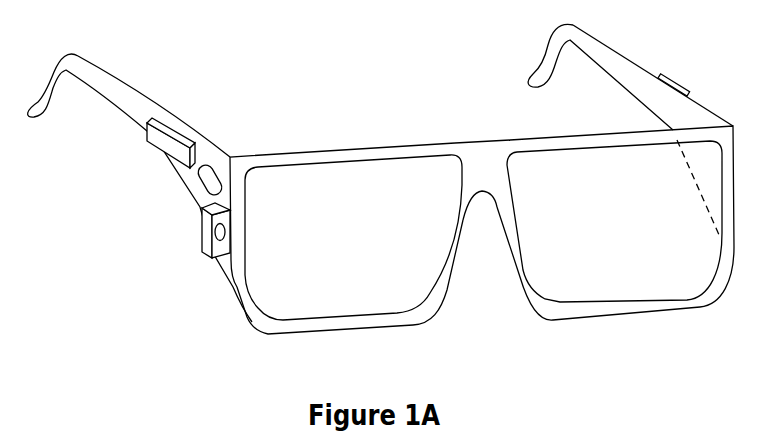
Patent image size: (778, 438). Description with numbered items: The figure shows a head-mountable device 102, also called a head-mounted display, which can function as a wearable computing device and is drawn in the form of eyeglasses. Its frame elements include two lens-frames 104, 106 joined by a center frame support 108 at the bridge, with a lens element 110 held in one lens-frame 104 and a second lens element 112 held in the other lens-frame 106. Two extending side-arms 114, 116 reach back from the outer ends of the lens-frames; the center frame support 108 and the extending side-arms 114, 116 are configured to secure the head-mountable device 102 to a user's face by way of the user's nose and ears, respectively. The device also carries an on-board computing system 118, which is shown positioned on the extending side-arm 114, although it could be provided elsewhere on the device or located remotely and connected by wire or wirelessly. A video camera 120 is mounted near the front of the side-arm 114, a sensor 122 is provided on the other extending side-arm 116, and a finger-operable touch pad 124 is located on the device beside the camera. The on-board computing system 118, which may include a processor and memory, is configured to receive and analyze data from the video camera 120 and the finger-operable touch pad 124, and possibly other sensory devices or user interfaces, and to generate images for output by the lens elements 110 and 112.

The head-mountable device 102 is at (331, 56).
The lens-frame 104 is at (323, 155).
The lens-frame 106 is at (557, 138).
The center frame support 108 is at (482, 162).
The lens element 110 is at (297, 298).
The lens element 112 is at (630, 283).
The extending side-arm 114 is at (173, 114).
The extending side-arm 116 is at (637, 60).
The on-board computing system 118 is at (165, 141).
The video camera 120 is at (202, 223).
The sensor 122 is at (677, 82).
The finger-operable touch pad 124 is at (203, 181).